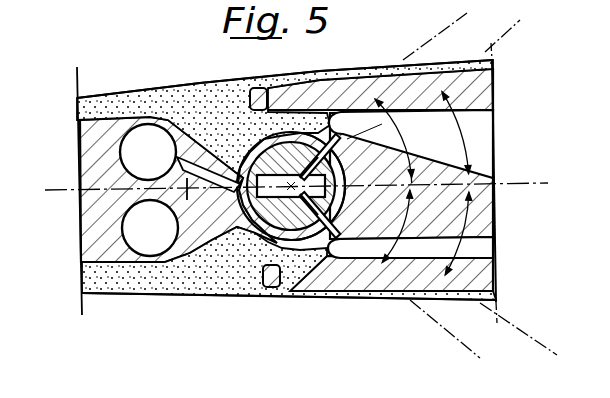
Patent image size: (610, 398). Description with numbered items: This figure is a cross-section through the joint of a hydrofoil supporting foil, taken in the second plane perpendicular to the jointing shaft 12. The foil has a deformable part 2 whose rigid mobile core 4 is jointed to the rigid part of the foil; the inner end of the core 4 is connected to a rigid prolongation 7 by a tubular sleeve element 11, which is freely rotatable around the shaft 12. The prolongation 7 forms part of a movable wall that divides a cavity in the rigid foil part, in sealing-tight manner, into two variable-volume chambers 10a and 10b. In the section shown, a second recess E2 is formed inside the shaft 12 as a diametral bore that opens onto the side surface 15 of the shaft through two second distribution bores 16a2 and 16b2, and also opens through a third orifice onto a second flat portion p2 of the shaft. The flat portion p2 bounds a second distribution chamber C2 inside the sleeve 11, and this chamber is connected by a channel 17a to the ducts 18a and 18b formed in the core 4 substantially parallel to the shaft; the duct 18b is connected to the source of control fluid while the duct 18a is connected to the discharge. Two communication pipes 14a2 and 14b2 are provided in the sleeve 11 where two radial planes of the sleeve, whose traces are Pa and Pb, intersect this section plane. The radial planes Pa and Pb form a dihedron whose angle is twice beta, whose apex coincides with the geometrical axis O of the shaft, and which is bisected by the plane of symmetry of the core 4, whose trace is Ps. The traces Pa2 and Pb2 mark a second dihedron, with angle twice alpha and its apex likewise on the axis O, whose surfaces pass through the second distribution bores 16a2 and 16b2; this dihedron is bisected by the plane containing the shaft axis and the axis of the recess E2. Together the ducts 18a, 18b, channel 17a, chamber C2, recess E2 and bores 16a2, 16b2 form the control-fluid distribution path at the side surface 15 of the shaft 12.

The deformable part 2 is at (114, 294).
The mobile core 4 is at (100, 162).
The prolongation 7 is at (487, 216).
The variable-volume chamber 10a is at (487, 119).
The variable-volume chamber 10b is at (480, 251).
The tubular sleeve element 11 is at (250, 82).
The shaft 12 is at (253, 225).
The communication pipe 14a2 is at (318, 135).
The communication pipe 14b2 is at (308, 242).
The side surface 15 is at (265, 127).
The second distribution bore 16a2 is at (292, 145).
The second distribution bore 16b2 is at (278, 218).
The channel 17a is at (185, 192).
The duct 18a is at (176, 152).
The duct 18b is at (178, 228).
The geometrical axis of the shaft O is at (291, 200).
The second distribution chamber C2 is at (185, 130).
The second recess E2 is at (255, 135).
The second flat portion p2 is at (232, 226).
The trace of radial plane Pa is at (433, 37).
The trace of dihedron surface Pa2 is at (507, 33).
The trace of radial plane Pb is at (466, 352).
The trace of dihedron surface Pb2 is at (533, 345).
The trace of plane of symmetry Ps is at (543, 183).